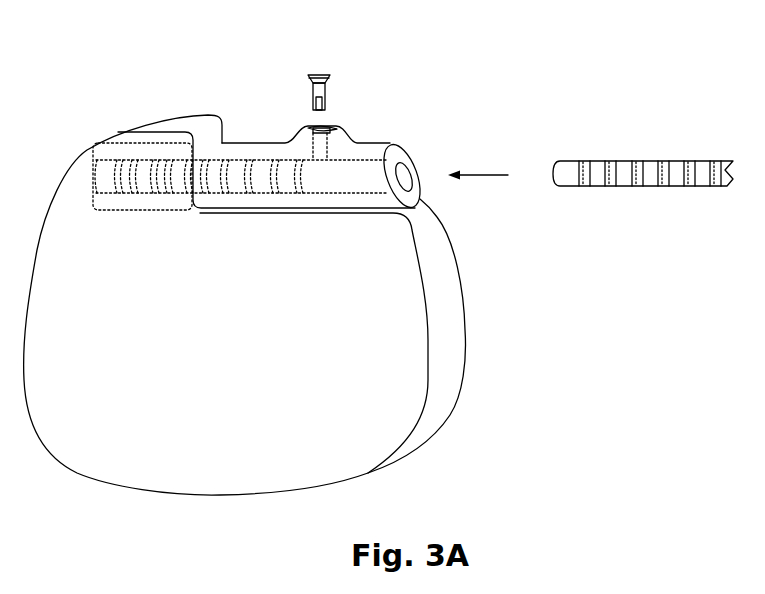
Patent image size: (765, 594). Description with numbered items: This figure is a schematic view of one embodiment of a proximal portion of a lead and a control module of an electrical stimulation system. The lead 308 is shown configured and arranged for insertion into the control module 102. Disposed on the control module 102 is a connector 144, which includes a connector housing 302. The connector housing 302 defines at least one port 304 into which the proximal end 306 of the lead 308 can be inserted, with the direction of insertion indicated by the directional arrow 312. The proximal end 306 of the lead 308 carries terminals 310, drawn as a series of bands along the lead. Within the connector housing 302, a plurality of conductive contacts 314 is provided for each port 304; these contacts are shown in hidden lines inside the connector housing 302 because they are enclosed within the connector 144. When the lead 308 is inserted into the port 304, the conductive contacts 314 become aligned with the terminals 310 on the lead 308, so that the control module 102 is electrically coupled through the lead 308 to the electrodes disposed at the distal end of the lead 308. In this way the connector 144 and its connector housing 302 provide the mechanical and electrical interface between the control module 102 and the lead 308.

The control module 102 is at (71, 121).
The connector 144 is at (250, 143).
The connector housing 302 is at (128, 157).
The port 304 is at (418, 156).
The proximal end 306 is at (624, 136).
The lead 308 is at (672, 160).
The terminals 310 is at (650, 163).
The directional arrow 312 is at (485, 173).
The conductive contacts 314 is at (317, 222).